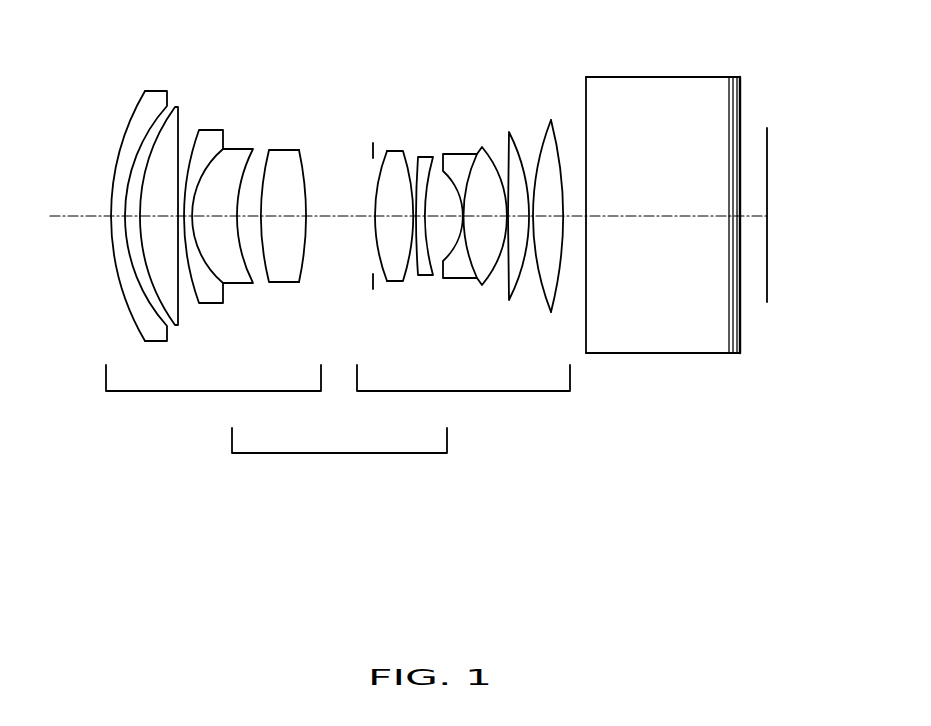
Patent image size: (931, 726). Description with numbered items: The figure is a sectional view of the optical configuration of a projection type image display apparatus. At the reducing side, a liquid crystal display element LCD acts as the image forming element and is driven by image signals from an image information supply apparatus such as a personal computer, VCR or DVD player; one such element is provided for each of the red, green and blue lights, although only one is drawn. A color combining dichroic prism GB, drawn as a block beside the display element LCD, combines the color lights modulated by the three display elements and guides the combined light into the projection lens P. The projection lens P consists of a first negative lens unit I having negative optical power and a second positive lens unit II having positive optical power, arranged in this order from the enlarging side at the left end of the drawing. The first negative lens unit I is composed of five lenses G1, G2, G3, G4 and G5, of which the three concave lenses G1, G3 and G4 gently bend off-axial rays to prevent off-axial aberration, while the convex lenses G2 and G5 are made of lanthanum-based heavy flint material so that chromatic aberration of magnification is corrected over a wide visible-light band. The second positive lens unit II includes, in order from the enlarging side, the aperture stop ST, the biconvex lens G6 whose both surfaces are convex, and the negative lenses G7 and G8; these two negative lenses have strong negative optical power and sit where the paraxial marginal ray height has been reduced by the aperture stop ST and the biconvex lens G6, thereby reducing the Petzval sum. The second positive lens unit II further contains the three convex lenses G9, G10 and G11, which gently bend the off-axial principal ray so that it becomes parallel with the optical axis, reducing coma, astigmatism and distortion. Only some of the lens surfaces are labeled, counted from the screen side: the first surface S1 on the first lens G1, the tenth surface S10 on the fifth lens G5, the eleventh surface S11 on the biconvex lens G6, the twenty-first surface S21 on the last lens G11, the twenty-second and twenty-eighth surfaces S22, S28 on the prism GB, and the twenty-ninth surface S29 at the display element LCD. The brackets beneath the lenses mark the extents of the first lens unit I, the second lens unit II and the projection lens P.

The concave lens G1 is at (114, 187).
The convex lens G2 is at (173, 107).
The concave lens G3 is at (213, 137).
The concave lens G4 is at (243, 152).
The convex lens G5 is at (302, 219).
The biconvex lens G6 is at (401, 212).
The negative lens G7 is at (424, 275).
The negative lens G8 is at (457, 279).
The convex lens G9 is at (481, 284).
The convex lens G10 is at (508, 301).
The convex lens G11 is at (555, 211).
The first lens surface S1 is at (118, 279).
The tenth lens surface S10 is at (305, 258).
The eleventh lens surface S11 is at (376, 160).
The twenty-first lens surface S21 is at (558, 143).
The twenty-second surface S22 is at (586, 330).
The twenty-eighth surface S28 is at (741, 330).
The twenty-ninth surface S29 is at (763, 278).
The aperture stop ST is at (373, 150).
The color combining dichroic prism GB is at (691, 231).
The liquid crystal display element LCD is at (793, 239).
The first negative lens unit I is at (213, 393).
The second positive lens unit II is at (463, 393).
The projection lens P is at (339, 454).